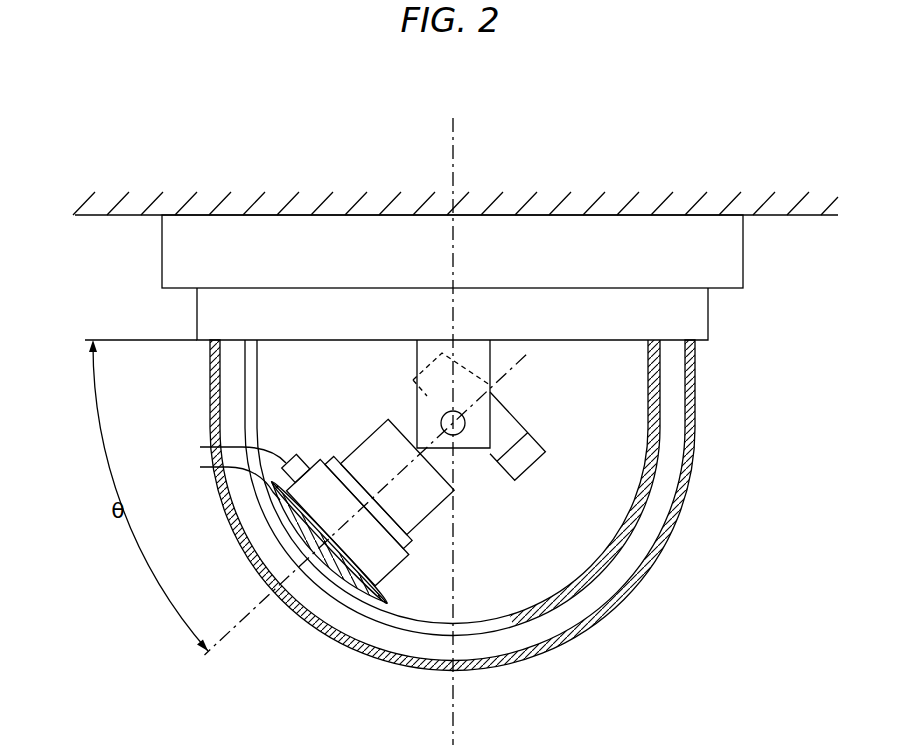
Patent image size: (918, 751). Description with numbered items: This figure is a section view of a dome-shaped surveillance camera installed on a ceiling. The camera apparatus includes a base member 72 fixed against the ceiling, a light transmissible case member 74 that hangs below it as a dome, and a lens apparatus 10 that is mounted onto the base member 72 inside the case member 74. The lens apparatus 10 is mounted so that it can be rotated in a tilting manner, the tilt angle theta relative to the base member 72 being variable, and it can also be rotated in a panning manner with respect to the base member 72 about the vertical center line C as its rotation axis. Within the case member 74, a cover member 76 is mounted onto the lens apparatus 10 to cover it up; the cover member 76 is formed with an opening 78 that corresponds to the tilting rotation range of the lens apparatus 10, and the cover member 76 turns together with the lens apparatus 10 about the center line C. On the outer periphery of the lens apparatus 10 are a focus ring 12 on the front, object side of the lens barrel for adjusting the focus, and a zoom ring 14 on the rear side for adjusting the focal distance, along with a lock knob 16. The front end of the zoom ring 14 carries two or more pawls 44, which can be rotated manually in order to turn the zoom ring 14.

The lens apparatus 10 is at (328, 388).
The focus ring 12 is at (330, 577).
The zoom ring 14 is at (430, 506).
The lock knob 16 is at (247, 449).
The pawls 44 is at (284, 470).
The base member 72 is at (726, 248).
The case member 74 is at (693, 432).
The cover member 76 is at (656, 372).
The opening 78 is at (370, 608).
The center line C is at (455, 722).